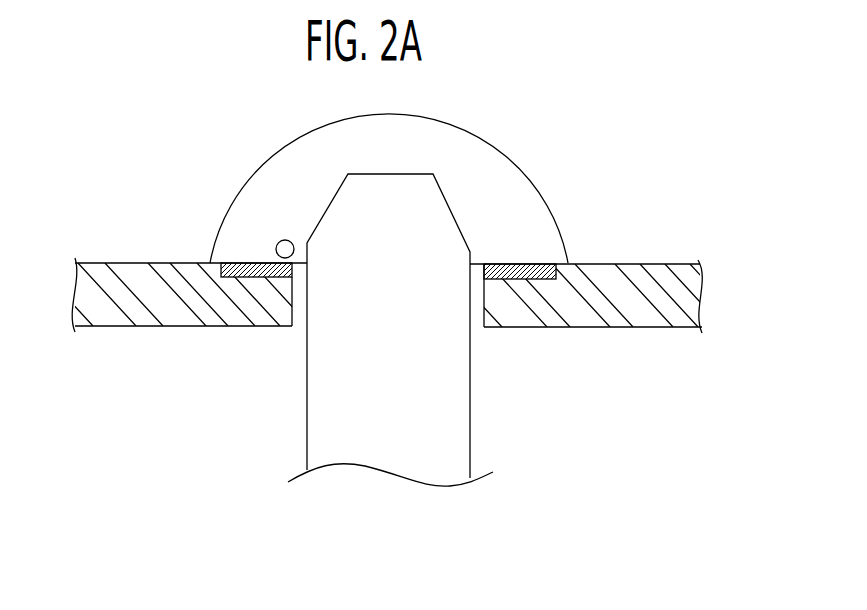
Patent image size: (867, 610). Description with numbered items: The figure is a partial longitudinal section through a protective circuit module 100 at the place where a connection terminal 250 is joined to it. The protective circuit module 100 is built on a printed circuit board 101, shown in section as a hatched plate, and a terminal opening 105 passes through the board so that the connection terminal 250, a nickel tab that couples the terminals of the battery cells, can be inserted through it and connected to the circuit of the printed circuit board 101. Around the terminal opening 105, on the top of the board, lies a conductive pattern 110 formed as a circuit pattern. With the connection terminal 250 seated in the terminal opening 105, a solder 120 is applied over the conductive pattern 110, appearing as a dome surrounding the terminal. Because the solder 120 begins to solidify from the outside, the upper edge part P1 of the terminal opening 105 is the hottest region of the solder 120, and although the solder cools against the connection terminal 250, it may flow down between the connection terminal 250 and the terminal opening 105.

The protective circuit module 100 is at (668, 230).
The printed circuit board 101 is at (145, 312).
The terminal opening 105 is at (484, 297).
The conductive pattern 110 is at (240, 263).
The solder 120 is at (477, 155).
The connection terminal 250 is at (383, 452).
The upper edge part P1 is at (284, 240).